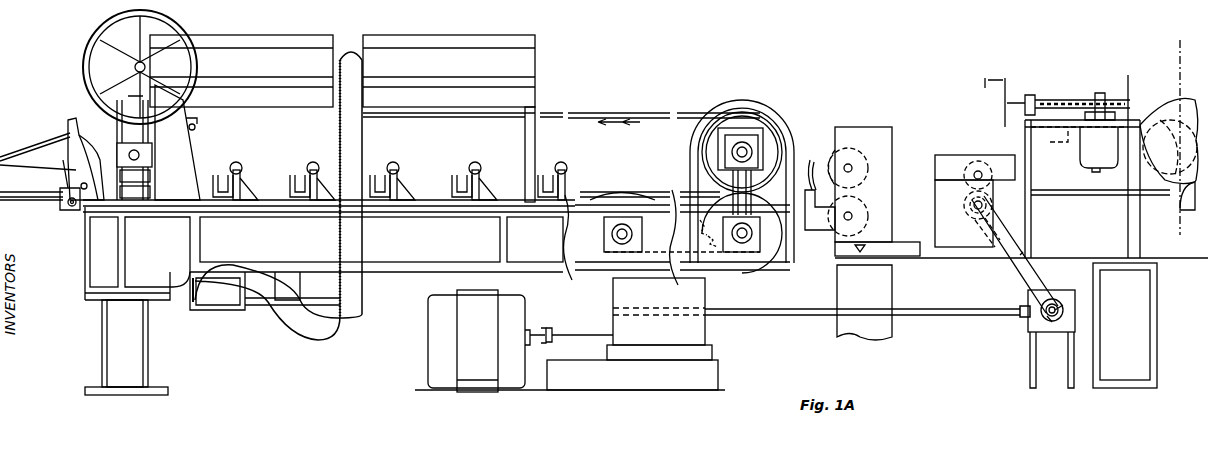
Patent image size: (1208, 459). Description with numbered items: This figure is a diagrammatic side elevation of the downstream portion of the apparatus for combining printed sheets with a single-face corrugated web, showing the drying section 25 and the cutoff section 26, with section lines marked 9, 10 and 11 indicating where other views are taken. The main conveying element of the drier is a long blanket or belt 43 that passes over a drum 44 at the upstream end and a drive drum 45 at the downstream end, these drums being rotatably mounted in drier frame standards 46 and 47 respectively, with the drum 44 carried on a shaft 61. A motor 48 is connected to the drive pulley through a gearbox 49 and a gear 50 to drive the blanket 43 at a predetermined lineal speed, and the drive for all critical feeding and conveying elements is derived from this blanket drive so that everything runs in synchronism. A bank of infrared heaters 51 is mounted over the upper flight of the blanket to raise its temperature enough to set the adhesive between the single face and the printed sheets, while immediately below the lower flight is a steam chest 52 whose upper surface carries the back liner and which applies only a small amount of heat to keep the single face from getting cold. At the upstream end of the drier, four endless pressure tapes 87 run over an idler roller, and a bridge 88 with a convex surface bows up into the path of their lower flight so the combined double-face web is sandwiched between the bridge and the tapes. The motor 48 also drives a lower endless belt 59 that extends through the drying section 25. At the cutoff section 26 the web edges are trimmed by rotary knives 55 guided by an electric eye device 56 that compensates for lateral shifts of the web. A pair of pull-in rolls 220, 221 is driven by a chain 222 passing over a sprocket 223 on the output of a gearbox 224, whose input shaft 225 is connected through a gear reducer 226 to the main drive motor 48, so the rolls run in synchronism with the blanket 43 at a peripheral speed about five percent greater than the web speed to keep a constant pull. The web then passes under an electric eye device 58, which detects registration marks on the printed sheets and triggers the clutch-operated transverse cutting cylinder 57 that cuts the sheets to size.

The drying section 25 is at (558, 44).
The cutoff section 26 is at (1175, 39).
The blanket or belt 43 is at (651, 111).
The drum 44 is at (100, 140).
The drive drum 45 is at (738, 120).
The drier frame standard 46 is at (153, 176).
The drier frame standard 47 is at (724, 162).
The motor 48 is at (478, 378).
The gearbox 49 is at (702, 332).
The gear 50 is at (722, 272).
The bank of infrared heaters 51 is at (318, 56).
The steam chest 52 is at (329, 295).
The rotary knives 55 is at (870, 160).
The electric eye device 56 is at (825, 230).
The cutting cylinder 57 is at (1176, 116).
The electric eye device 58 is at (1088, 150).
The lower endless belt 59 is at (656, 196).
The shaft 61 is at (140, 155).
The pressure tapes 87 is at (48, 196).
The bridge 88 is at (12, 197).
The pull-in roll 220 is at (975, 160).
The pull-in roll 221 is at (972, 200).
The chain 222 is at (1046, 270).
The sprocket 223 is at (1038, 318).
The gearbox 224 is at (1076, 319).
The shaft 225 is at (945, 320).
The gear reducer 226 is at (575, 350).
The section line 9- 9 is at (862, 100).
The section line 10- 10 is at (1082, 72).
The section line 11- 11 is at (1137, 40).